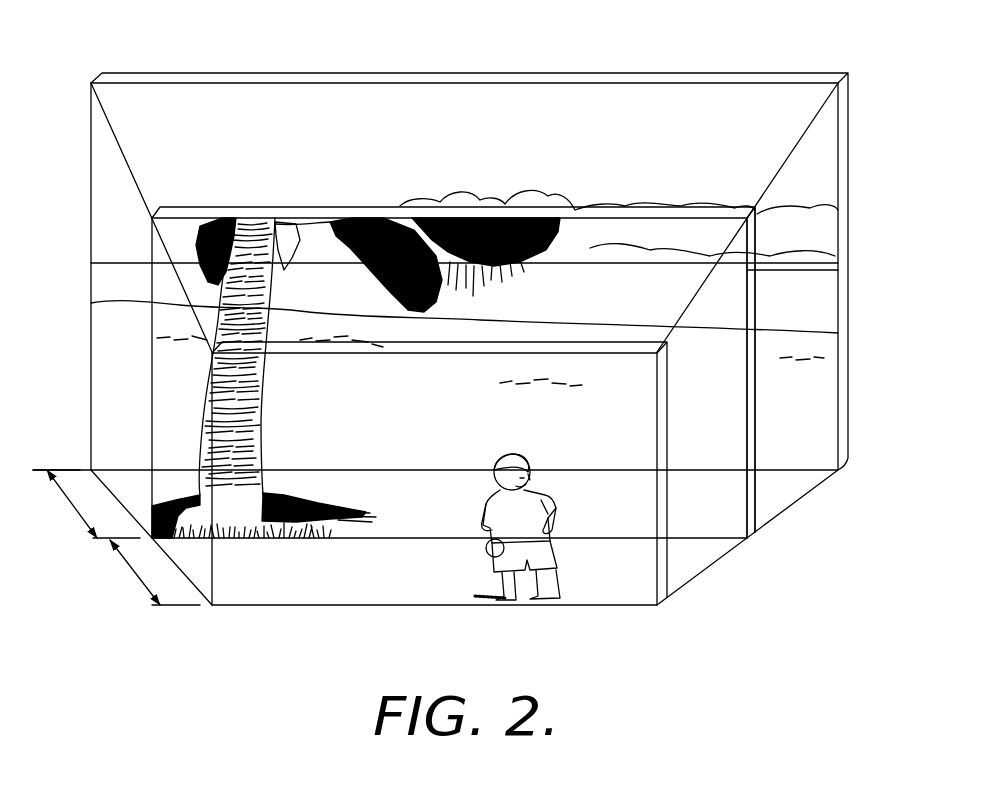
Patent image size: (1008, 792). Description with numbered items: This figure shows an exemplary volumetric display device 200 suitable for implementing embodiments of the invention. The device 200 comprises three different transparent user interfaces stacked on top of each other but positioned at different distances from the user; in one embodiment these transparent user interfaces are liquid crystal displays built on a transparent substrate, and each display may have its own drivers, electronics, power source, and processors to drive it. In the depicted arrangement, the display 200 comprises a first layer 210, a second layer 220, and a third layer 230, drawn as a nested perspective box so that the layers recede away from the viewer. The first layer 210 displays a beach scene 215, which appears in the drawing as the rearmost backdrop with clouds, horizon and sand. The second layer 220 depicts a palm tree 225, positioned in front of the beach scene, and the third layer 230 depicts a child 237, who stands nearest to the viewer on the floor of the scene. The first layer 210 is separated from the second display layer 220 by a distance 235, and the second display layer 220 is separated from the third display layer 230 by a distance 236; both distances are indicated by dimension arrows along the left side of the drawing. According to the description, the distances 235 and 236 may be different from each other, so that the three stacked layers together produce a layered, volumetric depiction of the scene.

The volumetric display device 200 is at (336, 30).
The first layer 210 is at (840, 469).
The beach scene 215 is at (826, 266).
The second layer 220 is at (755, 536).
The palm tree 225 is at (200, 427).
The third layer 230 is at (660, 606).
The distance 235 is at (74, 508).
The distance 236 is at (132, 577).
The child 237 is at (562, 576).